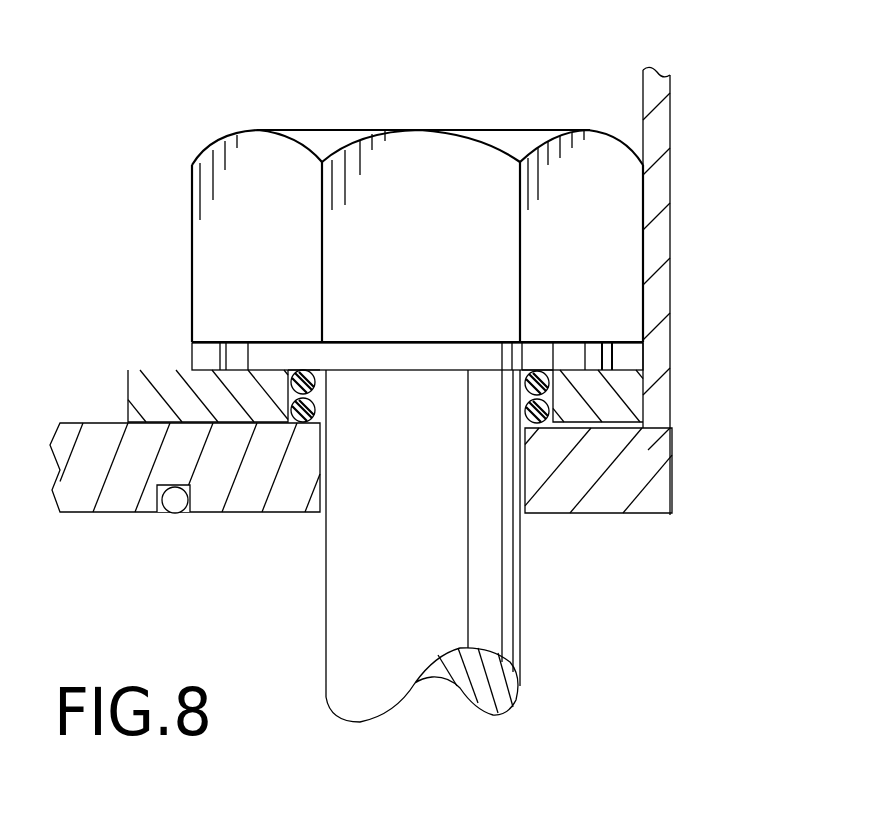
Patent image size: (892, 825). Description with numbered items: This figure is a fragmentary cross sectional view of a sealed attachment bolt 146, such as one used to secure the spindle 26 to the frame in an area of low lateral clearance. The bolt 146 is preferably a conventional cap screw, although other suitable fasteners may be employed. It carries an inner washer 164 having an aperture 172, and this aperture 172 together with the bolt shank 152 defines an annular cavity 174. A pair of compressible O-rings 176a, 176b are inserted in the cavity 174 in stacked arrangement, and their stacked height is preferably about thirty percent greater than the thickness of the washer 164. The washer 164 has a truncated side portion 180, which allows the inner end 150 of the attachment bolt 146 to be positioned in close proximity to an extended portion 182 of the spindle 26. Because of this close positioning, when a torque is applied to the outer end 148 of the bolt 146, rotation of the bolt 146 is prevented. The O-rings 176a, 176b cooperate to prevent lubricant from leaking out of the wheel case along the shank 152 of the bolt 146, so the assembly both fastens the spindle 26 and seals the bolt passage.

The spindle 26 is at (660, 185).
The attachment bolt 146 is at (332, 128).
The outer end 148 is at (492, 718).
The inner end 150 is at (467, 195).
The bolt shank 152 is at (365, 653).
The inner washer 164 is at (153, 393).
The aperture 172 is at (547, 348).
The annular cavity 174 is at (556, 405).
The compressible O-ring 176a is at (303, 423).
The compressible O-ring 176b is at (302, 373).
The truncated side portion 180 is at (645, 405).
The extended portion 182 is at (643, 128).